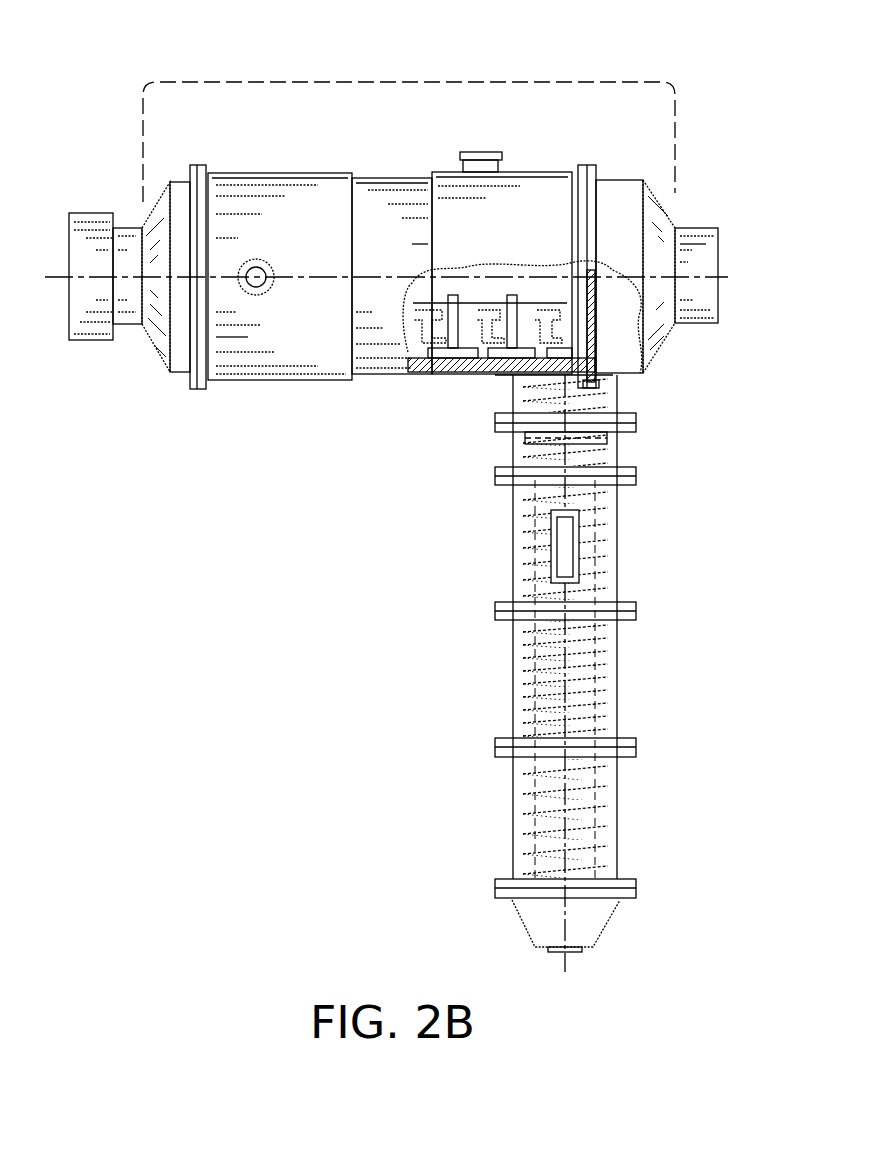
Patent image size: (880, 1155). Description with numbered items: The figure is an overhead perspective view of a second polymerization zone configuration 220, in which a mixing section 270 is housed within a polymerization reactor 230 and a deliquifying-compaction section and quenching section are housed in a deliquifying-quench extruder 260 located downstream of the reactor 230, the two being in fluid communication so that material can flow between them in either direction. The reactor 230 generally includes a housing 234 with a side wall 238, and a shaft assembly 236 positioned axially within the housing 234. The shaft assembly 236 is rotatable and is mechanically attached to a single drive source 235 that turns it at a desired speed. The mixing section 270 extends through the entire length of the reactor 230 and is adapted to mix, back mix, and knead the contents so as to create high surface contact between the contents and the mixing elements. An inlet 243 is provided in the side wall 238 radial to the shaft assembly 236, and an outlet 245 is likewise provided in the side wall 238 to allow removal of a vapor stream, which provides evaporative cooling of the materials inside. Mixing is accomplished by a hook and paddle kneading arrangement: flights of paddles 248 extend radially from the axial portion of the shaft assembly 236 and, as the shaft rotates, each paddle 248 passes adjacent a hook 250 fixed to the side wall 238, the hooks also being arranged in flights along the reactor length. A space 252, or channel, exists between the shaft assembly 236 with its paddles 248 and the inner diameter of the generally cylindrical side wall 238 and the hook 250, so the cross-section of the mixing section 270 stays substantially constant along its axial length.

The polymerization zone configuration 220 is at (292, 588).
The reactor 230 is at (342, 146).
The housing 234 is at (531, 170).
The drive source 235 is at (97, 235).
The shaft assembly 236 is at (615, 278).
The side wall 238 is at (272, 202).
The inlet 243 is at (266, 292).
The outlet 245 is at (480, 151).
The paddle 248 is at (516, 318).
The hook 250 is at (478, 318).
The space 252 is at (448, 362).
The extruder 260 is at (496, 791).
The mixing section 270 is at (403, 82).